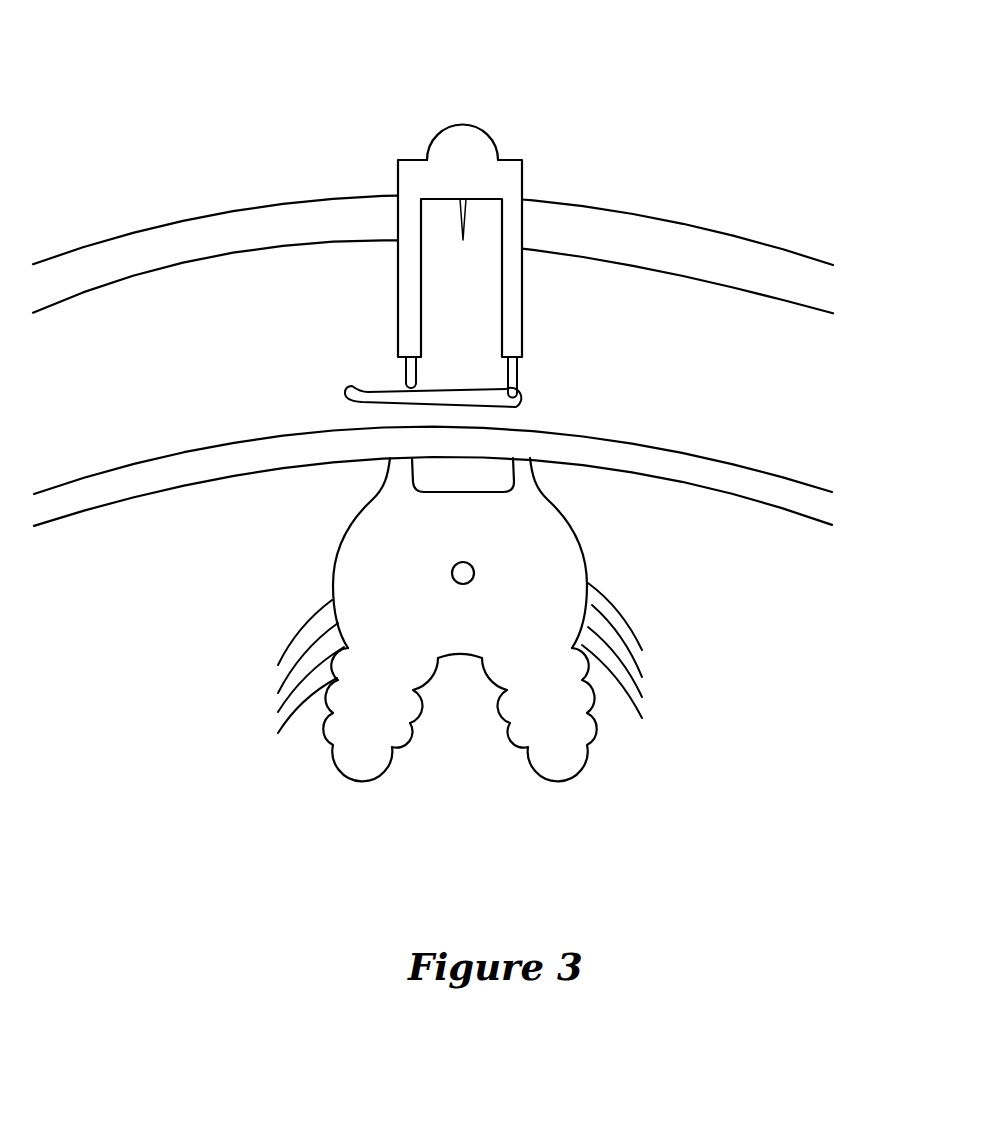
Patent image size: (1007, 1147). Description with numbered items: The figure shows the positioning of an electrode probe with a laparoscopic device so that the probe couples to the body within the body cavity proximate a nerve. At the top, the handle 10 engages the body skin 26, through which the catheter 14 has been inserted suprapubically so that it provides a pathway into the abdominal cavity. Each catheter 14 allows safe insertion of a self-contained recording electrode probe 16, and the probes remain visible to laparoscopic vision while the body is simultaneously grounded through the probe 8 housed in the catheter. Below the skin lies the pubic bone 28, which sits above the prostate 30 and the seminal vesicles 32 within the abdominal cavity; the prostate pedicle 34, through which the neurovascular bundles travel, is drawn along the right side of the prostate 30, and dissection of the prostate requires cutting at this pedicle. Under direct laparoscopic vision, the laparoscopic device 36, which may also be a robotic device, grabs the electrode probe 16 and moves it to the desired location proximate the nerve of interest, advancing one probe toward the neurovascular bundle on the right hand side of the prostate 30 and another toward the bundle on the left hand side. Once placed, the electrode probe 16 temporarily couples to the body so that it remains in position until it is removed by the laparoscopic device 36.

The probe 8 is at (463, 240).
The handle 10 is at (433, 139).
The catheter 14 is at (397, 287).
The electrode probe 16 is at (630, 337).
The body skin 26 is at (643, 235).
The pubic bone 28 is at (662, 465).
The prostate 30 is at (575, 528).
The seminal vesicles 32 is at (565, 745).
The prostate pedicle 34 is at (713, 643).
The laparoscopic device 36 is at (343, 389).